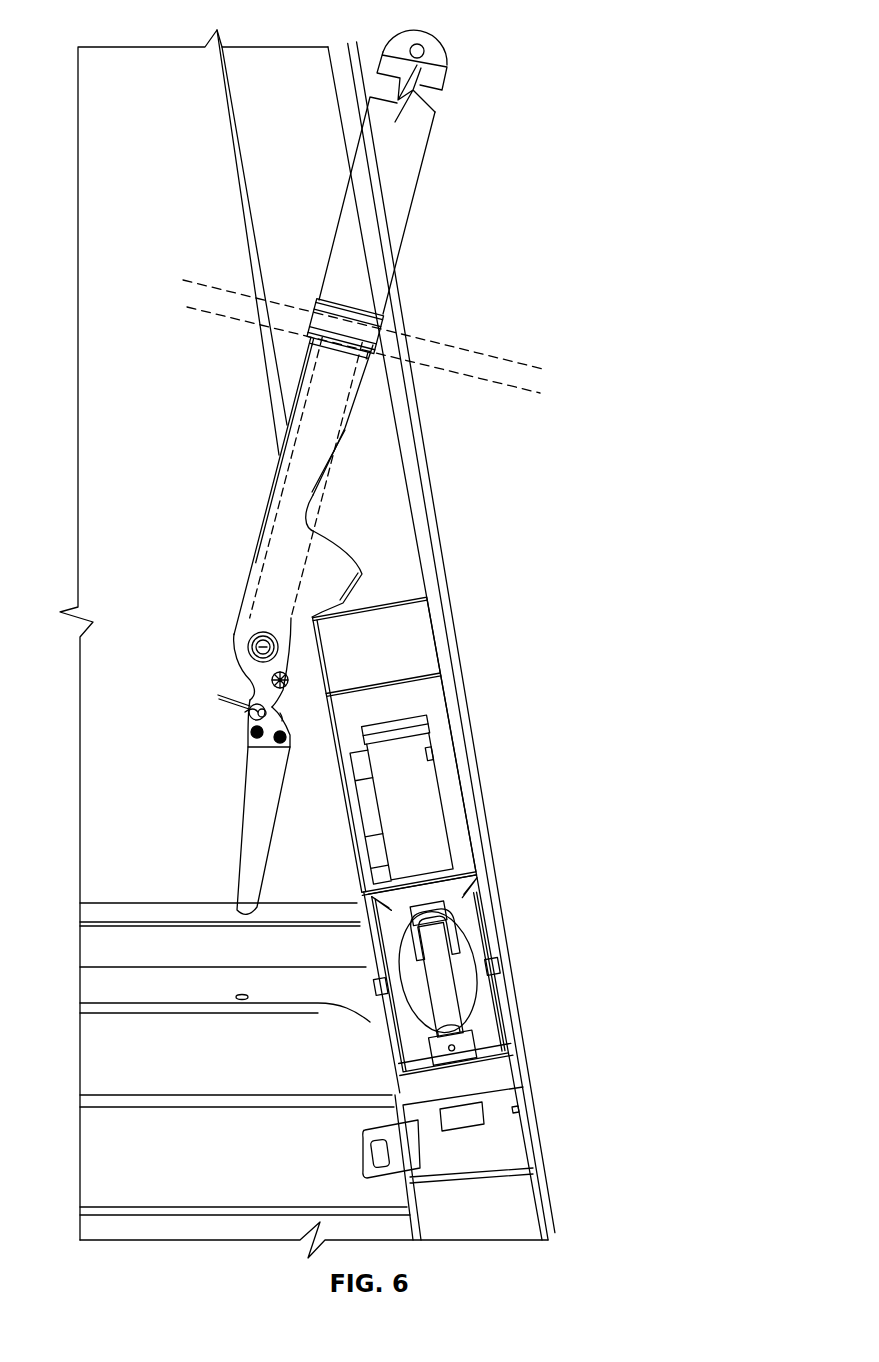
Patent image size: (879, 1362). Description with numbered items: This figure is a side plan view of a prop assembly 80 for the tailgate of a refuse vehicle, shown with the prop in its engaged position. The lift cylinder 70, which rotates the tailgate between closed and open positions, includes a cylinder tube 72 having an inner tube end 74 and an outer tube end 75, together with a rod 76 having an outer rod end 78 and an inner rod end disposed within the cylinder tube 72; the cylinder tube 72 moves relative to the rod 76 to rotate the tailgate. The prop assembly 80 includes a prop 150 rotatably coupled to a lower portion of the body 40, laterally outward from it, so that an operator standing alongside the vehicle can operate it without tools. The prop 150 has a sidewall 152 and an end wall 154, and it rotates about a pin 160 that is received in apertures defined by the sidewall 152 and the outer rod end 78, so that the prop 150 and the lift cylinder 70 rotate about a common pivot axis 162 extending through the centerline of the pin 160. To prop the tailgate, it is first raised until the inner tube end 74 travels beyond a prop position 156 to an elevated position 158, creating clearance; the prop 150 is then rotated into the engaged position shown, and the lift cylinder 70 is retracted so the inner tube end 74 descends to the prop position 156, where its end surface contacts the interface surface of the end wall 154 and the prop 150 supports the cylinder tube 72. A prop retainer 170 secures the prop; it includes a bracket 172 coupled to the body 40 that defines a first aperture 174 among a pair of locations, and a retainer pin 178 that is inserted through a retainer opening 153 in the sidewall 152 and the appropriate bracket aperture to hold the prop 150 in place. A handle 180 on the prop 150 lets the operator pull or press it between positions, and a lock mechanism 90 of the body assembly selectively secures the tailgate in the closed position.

The body 40 is at (130, 298).
The lift cylinder 70 is at (402, 318).
The cylinder tube 72 is at (412, 176).
The inner tube end 74 is at (380, 378).
The outer tube end 75 is at (458, 44).
The rod 76 is at (318, 500).
The outer rod end 78 is at (239, 606).
The prop assembly 80 is at (204, 710).
The lock mechanism 90 is at (413, 652).
The prop 150 is at (230, 515).
The sidewall 152 is at (283, 540).
The retainer opening 153 is at (395, 746).
The end wall 154 is at (345, 340).
The prop position 156 is at (517, 388).
The elevated position 158 is at (470, 351).
The pin 160 is at (247, 647).
The common pivot axis 162 is at (257, 647).
The prop retainer 170 is at (235, 807).
The bracket 172 is at (383, 684).
The first aperture 174 is at (287, 742).
The retainer pin 178 is at (245, 712).
The handle 180 is at (253, 865).